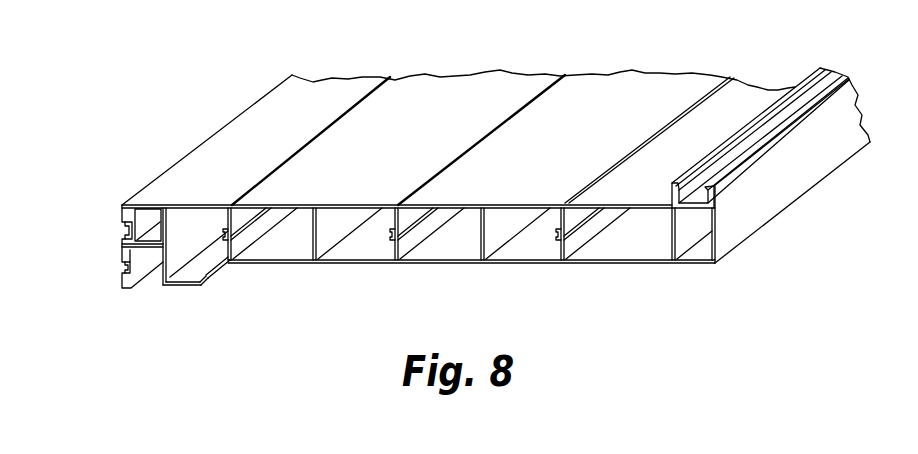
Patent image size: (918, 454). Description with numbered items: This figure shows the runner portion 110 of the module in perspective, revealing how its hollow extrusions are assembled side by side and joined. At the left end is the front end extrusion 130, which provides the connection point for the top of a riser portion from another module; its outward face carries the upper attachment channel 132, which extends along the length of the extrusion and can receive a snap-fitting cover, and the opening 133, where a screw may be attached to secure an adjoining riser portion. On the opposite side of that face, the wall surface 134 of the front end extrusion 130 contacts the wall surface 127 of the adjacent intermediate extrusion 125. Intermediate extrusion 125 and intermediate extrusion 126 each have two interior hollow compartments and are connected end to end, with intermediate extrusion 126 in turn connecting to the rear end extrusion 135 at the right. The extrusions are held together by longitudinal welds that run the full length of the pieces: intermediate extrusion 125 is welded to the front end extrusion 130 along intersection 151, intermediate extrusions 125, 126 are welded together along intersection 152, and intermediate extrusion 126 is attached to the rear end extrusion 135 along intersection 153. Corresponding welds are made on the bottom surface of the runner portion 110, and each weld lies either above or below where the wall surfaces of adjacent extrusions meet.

The runner portion 110 is at (632, 330).
The intermediate extrusion 125 is at (348, 266).
The intermediate extrusion 126 is at (465, 266).
The wall surface 127 is at (232, 236).
The front end extrusion 130 is at (173, 286).
The upper attachment channel 132 is at (118, 228).
The opening 133 is at (118, 266).
The wall surface 134 is at (210, 278).
The rear end extrusion 135 is at (588, 266).
The intersection 151 is at (398, 88).
The intersection 152 is at (553, 88).
The intersection 153 is at (712, 100).